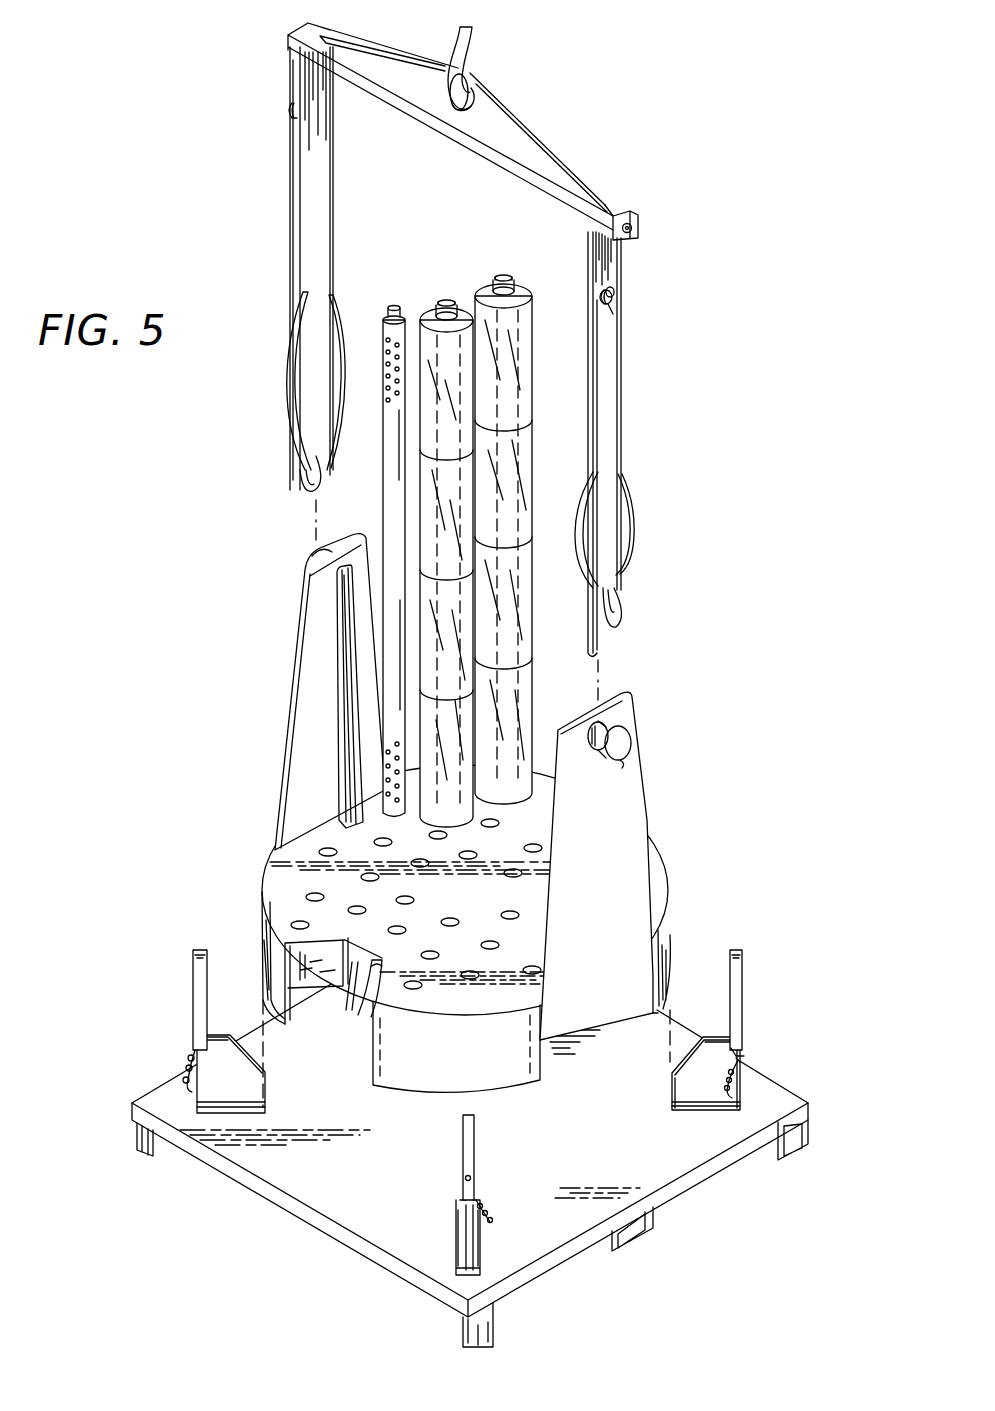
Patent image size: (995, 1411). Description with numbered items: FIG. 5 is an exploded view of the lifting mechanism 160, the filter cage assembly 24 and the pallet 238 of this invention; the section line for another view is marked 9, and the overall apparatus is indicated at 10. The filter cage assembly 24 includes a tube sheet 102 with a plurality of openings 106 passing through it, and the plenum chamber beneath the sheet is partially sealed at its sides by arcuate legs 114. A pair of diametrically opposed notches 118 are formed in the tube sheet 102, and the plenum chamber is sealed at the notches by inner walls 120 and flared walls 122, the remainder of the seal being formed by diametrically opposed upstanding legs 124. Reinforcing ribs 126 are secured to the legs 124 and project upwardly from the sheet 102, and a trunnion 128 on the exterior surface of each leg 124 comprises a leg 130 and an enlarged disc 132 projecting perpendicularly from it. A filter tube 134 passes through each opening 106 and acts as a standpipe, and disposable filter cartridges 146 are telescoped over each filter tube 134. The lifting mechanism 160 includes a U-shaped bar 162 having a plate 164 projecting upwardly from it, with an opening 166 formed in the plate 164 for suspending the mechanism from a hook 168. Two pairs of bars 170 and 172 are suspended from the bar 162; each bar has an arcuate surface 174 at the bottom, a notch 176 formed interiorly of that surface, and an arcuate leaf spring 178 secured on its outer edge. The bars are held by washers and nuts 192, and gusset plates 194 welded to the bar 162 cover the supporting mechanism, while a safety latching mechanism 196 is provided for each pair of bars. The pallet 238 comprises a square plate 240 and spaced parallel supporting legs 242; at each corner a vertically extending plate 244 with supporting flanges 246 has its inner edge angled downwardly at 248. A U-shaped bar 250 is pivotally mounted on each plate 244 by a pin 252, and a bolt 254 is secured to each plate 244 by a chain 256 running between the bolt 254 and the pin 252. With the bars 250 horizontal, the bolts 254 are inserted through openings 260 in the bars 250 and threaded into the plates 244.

The lifting apparatus 10 is at (286, 9).
The filter cage assembly 24 is at (690, 797).
The tube sheet 102 is at (530, 966).
The openings 106 is at (452, 918).
The arcuate legs 114 is at (470, 1056).
The notches 118 is at (353, 1014).
The inner walls 120 is at (372, 990).
The flared walls 122 is at (326, 984).
The upstanding legs 124 is at (300, 770).
The reinforcing ribs 126 is at (352, 750).
The trunnion 128 is at (320, 555).
The leg 130 is at (622, 726).
The enlarged disc 132 is at (628, 758).
The filter tube 134 is at (383, 430).
The disposable filter cartridges 146 is at (514, 390).
The lifting mechanism 160 is at (682, 420).
The U-shaped bar 162 is at (637, 214).
The plate 164 is at (533, 132).
The opening 166 is at (478, 98).
The hook 168 is at (477, 50).
The bars 170 is at (333, 236).
The bars 172 is at (296, 194).
The arcuate surface 174 is at (612, 646).
The notch 176 is at (618, 604).
The arcuate leaf spring 178 is at (290, 366).
The nuts 192 is at (633, 240).
The gusset plates 194 is at (316, 72).
The safety latching mechanism 196 is at (619, 306).
The pallet 238 is at (782, 1007).
The plate 240 is at (622, 1165).
The supporting legs 242 is at (806, 1146).
The vertically extending plate 244 is at (250, 1094).
The flanges 246 is at (672, 1112).
The angled inner edge 248 is at (240, 1037).
The U-shaped bar 250 is at (193, 988).
The pin 252 is at (745, 1052).
The bolt 254 is at (732, 1086).
The chain 256 is at (480, 1205).
The openings 260 is at (463, 1178).
The section line 9- 9 is at (173, 1037).